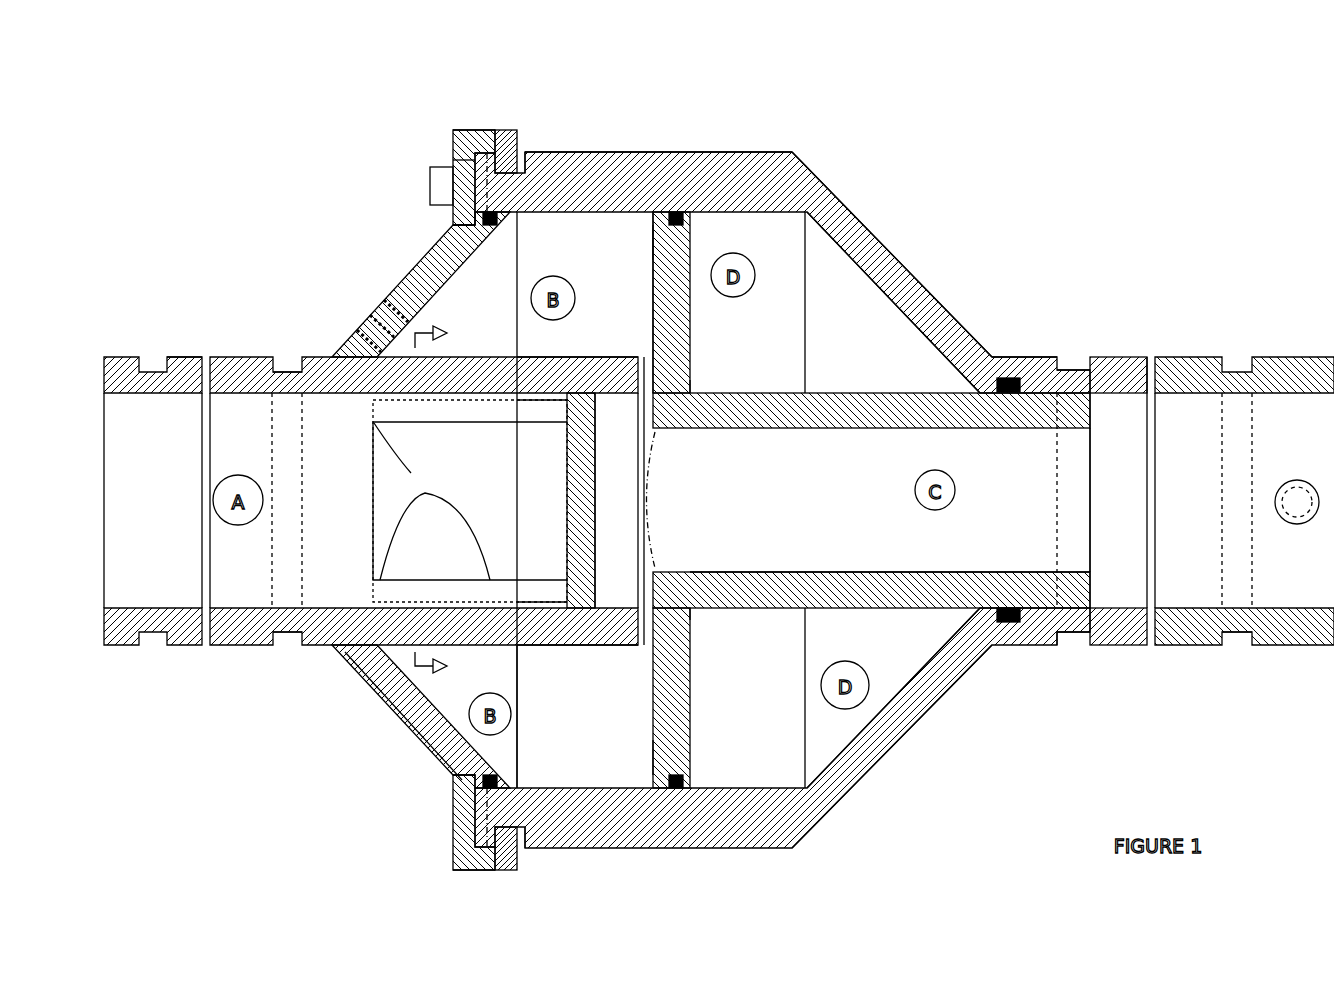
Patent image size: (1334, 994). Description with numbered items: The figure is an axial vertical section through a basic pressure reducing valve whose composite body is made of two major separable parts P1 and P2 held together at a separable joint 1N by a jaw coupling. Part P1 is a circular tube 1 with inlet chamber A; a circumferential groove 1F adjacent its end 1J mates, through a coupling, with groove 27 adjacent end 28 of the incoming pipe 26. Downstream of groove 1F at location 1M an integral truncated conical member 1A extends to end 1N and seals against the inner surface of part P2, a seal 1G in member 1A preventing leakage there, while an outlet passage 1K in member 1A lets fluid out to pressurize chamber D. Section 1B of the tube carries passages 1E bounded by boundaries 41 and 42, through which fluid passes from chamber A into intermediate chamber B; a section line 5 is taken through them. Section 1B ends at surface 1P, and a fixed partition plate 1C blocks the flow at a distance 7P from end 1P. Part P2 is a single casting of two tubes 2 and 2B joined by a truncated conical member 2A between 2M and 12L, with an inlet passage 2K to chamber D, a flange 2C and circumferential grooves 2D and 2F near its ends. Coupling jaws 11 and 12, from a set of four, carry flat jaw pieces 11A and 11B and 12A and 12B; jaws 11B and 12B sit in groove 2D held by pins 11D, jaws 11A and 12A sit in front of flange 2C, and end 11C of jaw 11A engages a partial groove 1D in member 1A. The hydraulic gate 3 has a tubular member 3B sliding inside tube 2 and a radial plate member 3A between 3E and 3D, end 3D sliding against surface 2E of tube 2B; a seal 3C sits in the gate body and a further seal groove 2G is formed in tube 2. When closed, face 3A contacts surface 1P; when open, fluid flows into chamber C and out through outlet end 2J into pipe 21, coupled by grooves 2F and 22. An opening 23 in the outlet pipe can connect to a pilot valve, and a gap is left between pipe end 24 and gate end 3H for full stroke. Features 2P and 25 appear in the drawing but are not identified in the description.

The circular tube 1 is at (216, 607).
The truncated conical member 1A is at (356, 328).
The passage section of tube 1B is at (528, 648).
The fixed partition plate 1C is at (567, 497).
The circumferential groove 1D is at (462, 236).
The passage 1E is at (451, 423).
The circumferential groove 1F is at (286, 371).
The seal 1G is at (493, 232).
The end of part P1 1J is at (213, 380).
The outlet passage 1K is at (396, 298).
The section location 1M is at (361, 393).
The separable joint 1N is at (546, 210).
The end of section 1B 1P is at (641, 357).
The outlet tube 2 is at (1102, 648).
The truncated conical member 2A is at (906, 275).
The tube of part P2 2B is at (696, 157).
The circumferential flange 2C is at (489, 128).
The circumferential groove 2D is at (531, 180).
The inner surface of tube 2B 2E is at (598, 153).
The circumferential groove 2F is at (1080, 660).
The seal groove 2G is at (1011, 357).
The outlet end 2J is at (1150, 358).
The inlet passage 2K is at (964, 330).
The junction of conical member 2M is at (1022, 340).
The flow passage 2P is at (656, 450).
The hydraulic gate 3 is at (865, 572).
The radial plate member 3A is at (654, 277).
The tubular member 3B is at (900, 572).
The seal 3C is at (652, 248).
The end of gate section 3D is at (688, 224).
The boundary of gate section 3E is at (692, 391).
The end of gate 3H is at (1090, 572).
The section line 5 is at (441, 500).
The partition plate distance 7P is at (616, 394).
The jaw member 11 is at (456, 134).
The flat jaw piece 11A is at (456, 161).
The flat jaw piece 11B is at (506, 130).
The jaw end 11C is at (462, 226).
The pin or bolt 11D is at (431, 186).
The jaw member 12 is at (454, 842).
The flat jaw piece 12A is at (456, 795).
The flat jaw piece 12B is at (508, 872).
The junction of conical member 12L is at (861, 222).
The outlet pipe 21 is at (1298, 620).
The circumferential groove 22 is at (1241, 648).
The opening 23 is at (1297, 498).
The pipe end 24 is at (1160, 358).
The outlet pipe flange 25 is at (1146, 648).
The incoming pipe 26 is at (118, 383).
The groove 27 is at (155, 648).
The end of incoming pipe 28 is at (196, 358).
The passage boundary 41 is at (512, 402).
The passage boundary 42 is at (524, 600).
The first major part of valve body P1 is at (426, 746).
The second major part of valve body P2 is at (786, 853).